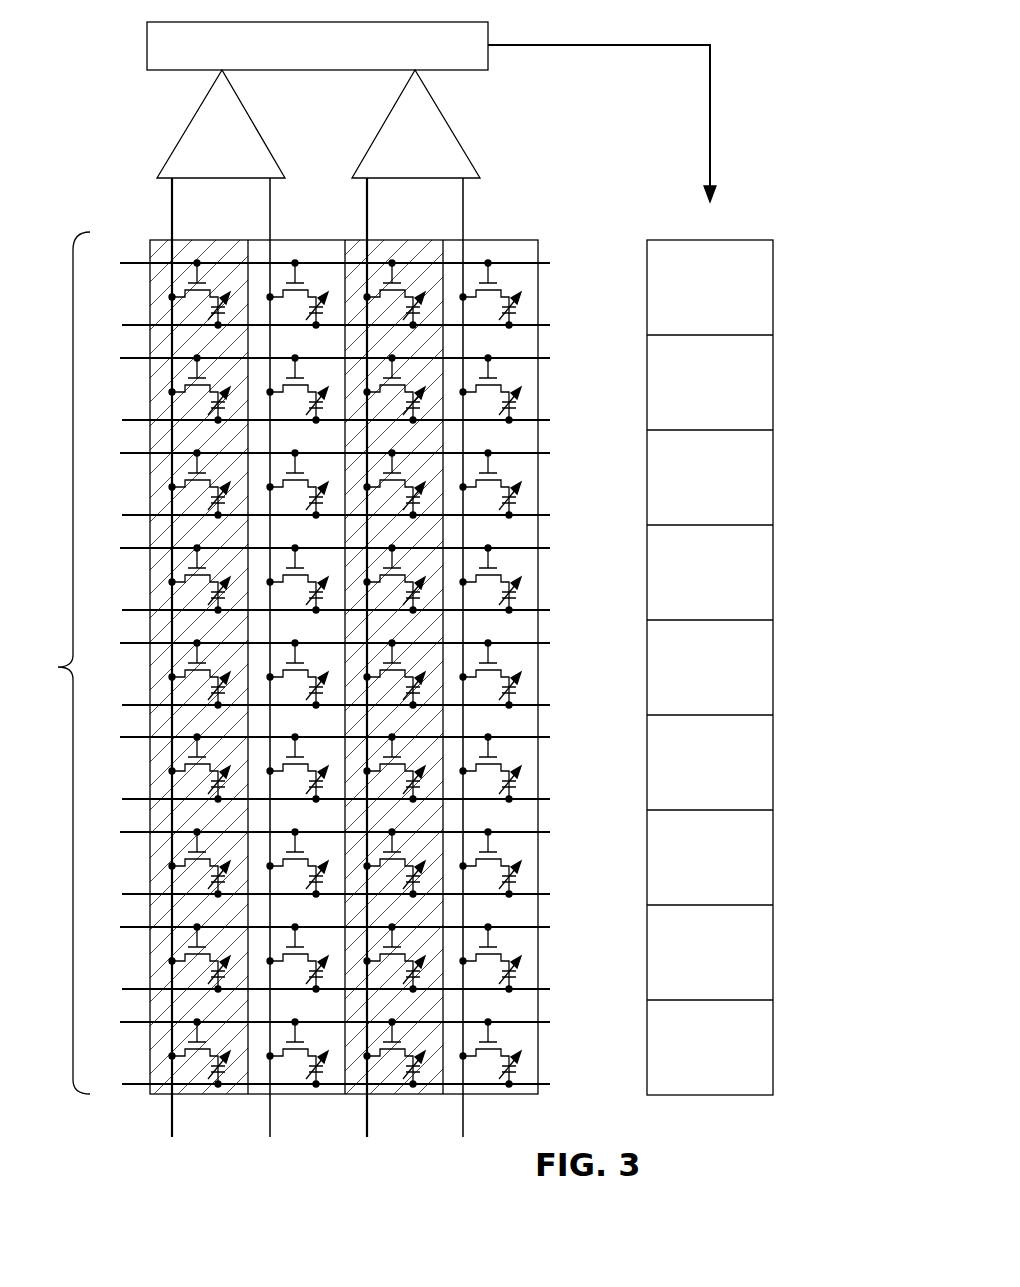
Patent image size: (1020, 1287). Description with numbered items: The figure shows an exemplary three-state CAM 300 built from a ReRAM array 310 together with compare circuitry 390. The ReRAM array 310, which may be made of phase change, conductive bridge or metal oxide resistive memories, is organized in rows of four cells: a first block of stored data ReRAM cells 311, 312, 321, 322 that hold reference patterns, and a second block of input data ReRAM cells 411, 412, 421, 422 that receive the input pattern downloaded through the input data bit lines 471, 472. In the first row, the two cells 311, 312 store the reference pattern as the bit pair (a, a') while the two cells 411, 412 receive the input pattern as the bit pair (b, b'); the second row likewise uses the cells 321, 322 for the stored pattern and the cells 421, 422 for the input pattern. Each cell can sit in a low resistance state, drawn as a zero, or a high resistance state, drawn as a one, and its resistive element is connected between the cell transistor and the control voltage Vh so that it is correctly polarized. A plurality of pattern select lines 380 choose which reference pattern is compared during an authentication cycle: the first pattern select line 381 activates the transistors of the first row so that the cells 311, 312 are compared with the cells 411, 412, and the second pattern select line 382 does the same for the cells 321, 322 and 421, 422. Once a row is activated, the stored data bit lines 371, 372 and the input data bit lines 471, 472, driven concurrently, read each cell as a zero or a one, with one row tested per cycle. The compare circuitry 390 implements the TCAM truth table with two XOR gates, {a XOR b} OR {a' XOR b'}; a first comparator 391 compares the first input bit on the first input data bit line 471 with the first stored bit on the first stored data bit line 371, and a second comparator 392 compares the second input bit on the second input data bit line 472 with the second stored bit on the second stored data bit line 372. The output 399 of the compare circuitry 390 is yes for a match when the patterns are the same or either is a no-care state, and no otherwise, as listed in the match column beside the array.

The three-state CAM 300 is at (96, 153).
The ReRAM array 310 is at (146, 237).
The stored data ReRAM cell 311 is at (165, 297).
The stored data ReRAM cell 312 is at (410, 250).
The stored data ReRAM cell 321 is at (165, 392).
The stored data ReRAM cell 322 is at (378, 362).
The first stored data bit line 371 is at (172, 1115).
The second stored data bit line 372 is at (367, 1115).
The pattern select lines 380 is at (282, 663).
The first pattern select line 381 is at (131, 263).
The second pattern select line 382 is at (131, 358).
The compare circuitry 390 is at (147, 48).
The first comparator 391 is at (262, 122).
The second comparator 392 is at (455, 122).
The output 399 is at (636, 45).
The input data ReRAM cell 411 is at (328, 250).
The input data ReRAM cell 412 is at (530, 303).
The input data ReRAM cell 421 is at (283, 362).
The input data ReRAM cell 422 is at (530, 399).
The first input data bit line 471 is at (270, 1115).
The second input data bit line 472 is at (463, 1115).